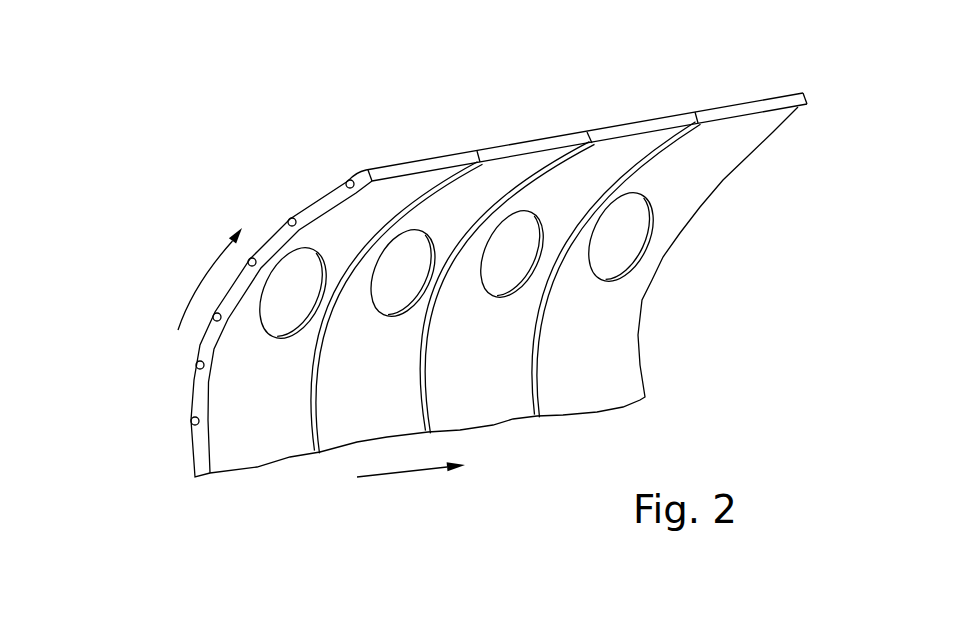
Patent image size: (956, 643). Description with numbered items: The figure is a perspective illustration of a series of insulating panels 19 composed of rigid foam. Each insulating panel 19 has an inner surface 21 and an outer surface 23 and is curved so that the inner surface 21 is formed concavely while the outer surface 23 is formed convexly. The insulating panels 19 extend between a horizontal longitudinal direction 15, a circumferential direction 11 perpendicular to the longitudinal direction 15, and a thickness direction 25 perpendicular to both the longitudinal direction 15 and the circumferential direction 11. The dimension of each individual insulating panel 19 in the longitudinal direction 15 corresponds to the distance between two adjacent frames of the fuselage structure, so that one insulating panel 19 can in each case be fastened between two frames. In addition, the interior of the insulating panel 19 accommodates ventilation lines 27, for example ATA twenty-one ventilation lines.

The circumferential direction 11 is at (200, 283).
The longitudinal direction 15 is at (413, 473).
The insulating panel 19 is at (503, 176).
The inner surface 21 is at (412, 371).
The outer surface 23 is at (310, 161).
The thickness direction 25 is at (549, 119).
The ventilation lines 27 is at (196, 368).